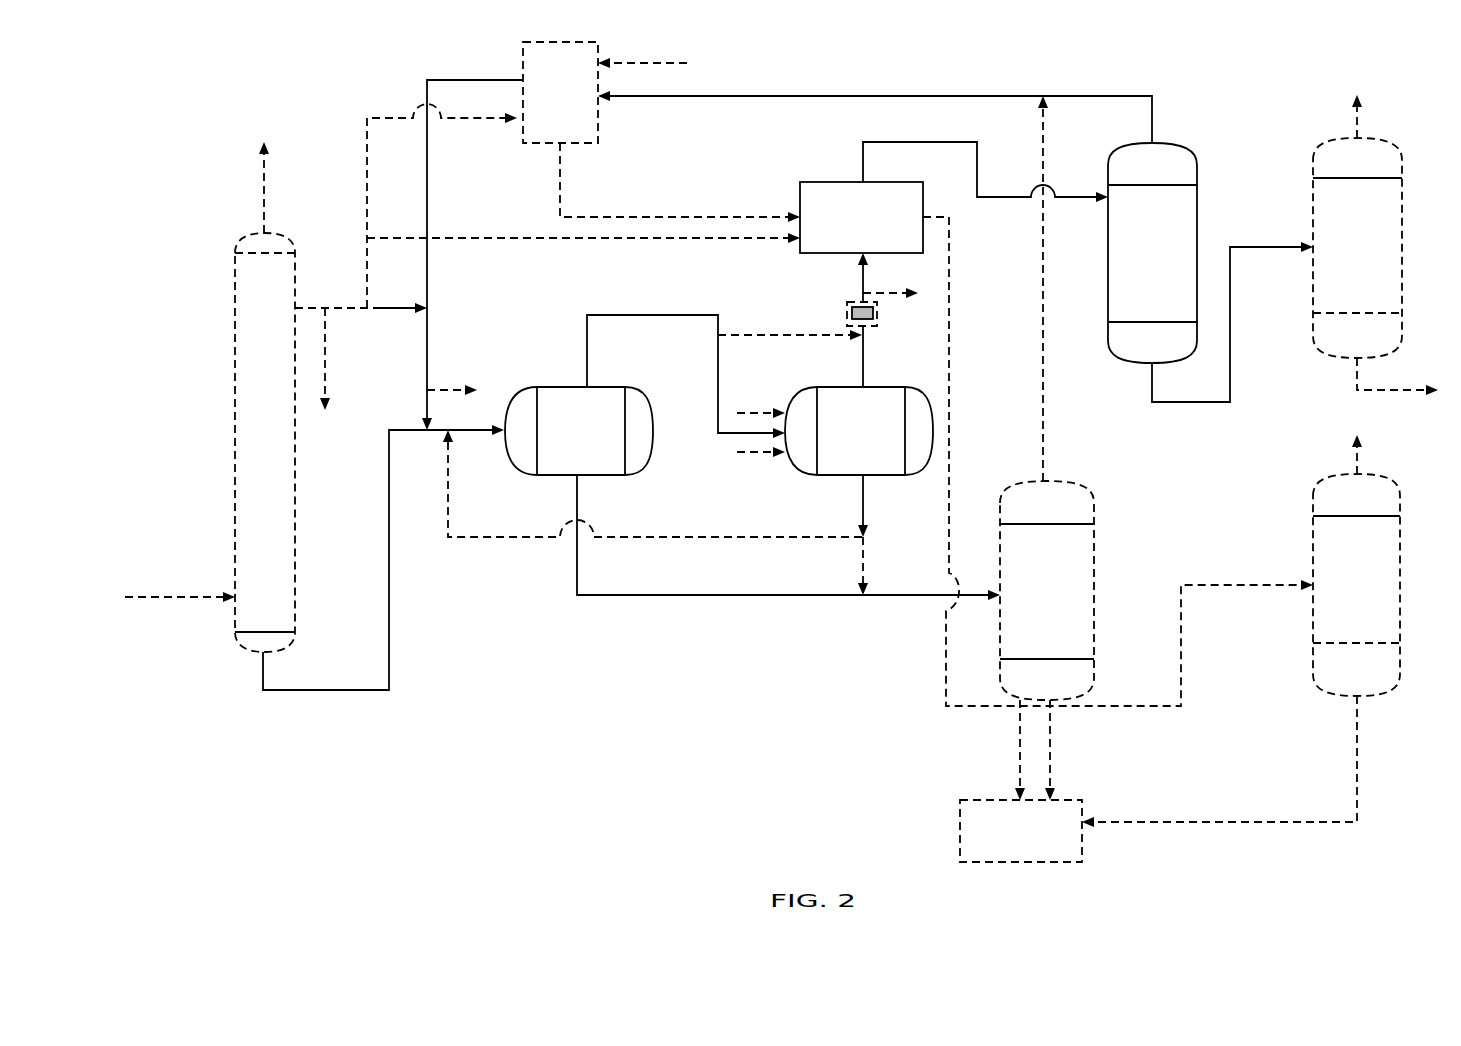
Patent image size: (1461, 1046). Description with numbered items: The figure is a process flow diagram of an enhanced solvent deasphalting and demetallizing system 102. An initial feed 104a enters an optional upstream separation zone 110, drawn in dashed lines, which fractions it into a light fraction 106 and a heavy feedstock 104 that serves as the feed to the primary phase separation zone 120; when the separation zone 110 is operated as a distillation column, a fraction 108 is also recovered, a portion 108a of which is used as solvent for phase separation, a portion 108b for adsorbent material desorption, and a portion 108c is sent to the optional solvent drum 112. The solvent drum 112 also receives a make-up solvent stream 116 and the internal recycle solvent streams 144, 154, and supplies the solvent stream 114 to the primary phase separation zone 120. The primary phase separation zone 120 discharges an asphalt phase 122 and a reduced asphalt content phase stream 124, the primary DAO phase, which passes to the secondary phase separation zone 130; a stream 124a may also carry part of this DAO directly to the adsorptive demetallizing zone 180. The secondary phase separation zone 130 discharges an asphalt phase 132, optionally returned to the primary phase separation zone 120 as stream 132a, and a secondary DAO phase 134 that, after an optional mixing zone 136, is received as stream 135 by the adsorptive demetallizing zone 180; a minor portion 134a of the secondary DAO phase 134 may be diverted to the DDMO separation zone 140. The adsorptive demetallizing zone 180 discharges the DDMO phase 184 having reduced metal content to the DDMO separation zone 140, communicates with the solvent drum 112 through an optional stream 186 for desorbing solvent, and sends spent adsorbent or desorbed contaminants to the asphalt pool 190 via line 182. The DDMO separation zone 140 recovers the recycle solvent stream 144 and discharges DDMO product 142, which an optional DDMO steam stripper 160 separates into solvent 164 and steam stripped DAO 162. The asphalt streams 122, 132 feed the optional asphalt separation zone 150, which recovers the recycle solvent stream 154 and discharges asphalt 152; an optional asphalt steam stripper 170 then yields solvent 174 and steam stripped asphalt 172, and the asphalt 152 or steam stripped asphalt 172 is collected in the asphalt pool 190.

The enhanced solvent deasphalting and demetallizing system 102 is at (257, 100).
The heavy feedstock 104 is at (388, 555).
The initial feed 104a is at (172, 597).
The light fraction 106 is at (262, 178).
The fraction 108 is at (300, 303).
The portion of the fraction used as solvent 108a is at (385, 310).
The portion of the fraction used as desorption solvent 108b is at (513, 241).
The portion of the fraction sent to the solvent drum 108c is at (365, 170).
The separation zone 110 is at (281, 455).
The solvent drum 112 is at (576, 105).
The solvent stream 114 is at (425, 410).
The make-up solvent stream 116 is at (657, 62).
The primary phase separation zone 120 is at (596, 443).
The asphalt phase 122 is at (733, 598).
The reduced asphalt content phase stream 124 is at (630, 316).
The stream 124a is at (758, 333).
The secondary phase separation zone 130 is at (876, 443).
The asphalt phase 132 is at (867, 510).
The stream 132a is at (727, 535).
The secondary DAO phase 134 is at (858, 344).
The portion of stream 134 134a is at (880, 292).
The stream 135 is at (858, 283).
The mixing zone 136 is at (878, 315).
The DDMO separation zone 140 is at (1168, 266).
The DDMO product 142 is at (1173, 405).
The recycle solvent stream 144 is at (1100, 95).
The asphalt separation zone 150 is at (1063, 602).
The asphalt 152 is at (1052, 745).
The recycle solvent stream 154 is at (1045, 406).
The DDMO steam stripper 160 is at (1373, 268).
The steam stripped DAO 162 is at (1410, 388).
The solvent 164 is at (1362, 115).
The asphalt steam stripper 170 is at (1373, 607).
The steam stripped asphalt 172 is at (1360, 746).
The solvent 174 is at (1360, 456).
The adsorptive demetallizing zone 180 is at (879, 227).
The line 182 is at (951, 298).
The DDMO phase 184 is at (862, 165).
The stream 186 is at (642, 214).
The asphalt pool 190 is at (1037, 843).